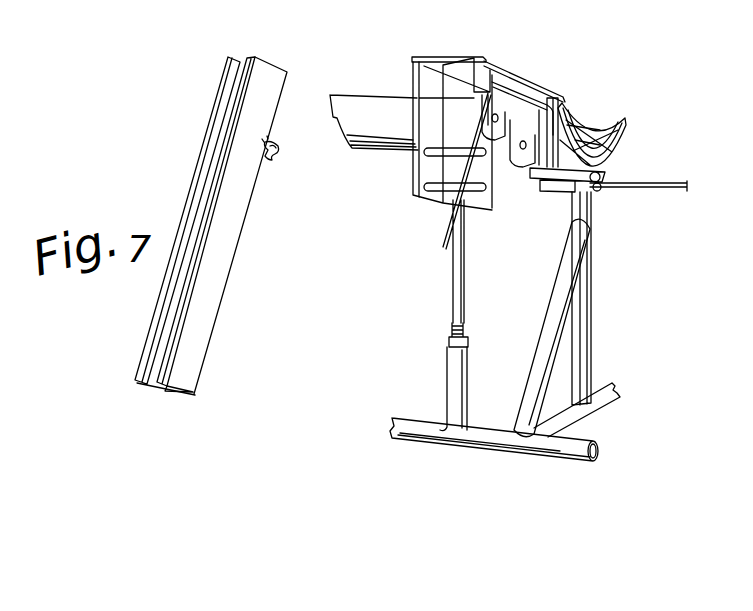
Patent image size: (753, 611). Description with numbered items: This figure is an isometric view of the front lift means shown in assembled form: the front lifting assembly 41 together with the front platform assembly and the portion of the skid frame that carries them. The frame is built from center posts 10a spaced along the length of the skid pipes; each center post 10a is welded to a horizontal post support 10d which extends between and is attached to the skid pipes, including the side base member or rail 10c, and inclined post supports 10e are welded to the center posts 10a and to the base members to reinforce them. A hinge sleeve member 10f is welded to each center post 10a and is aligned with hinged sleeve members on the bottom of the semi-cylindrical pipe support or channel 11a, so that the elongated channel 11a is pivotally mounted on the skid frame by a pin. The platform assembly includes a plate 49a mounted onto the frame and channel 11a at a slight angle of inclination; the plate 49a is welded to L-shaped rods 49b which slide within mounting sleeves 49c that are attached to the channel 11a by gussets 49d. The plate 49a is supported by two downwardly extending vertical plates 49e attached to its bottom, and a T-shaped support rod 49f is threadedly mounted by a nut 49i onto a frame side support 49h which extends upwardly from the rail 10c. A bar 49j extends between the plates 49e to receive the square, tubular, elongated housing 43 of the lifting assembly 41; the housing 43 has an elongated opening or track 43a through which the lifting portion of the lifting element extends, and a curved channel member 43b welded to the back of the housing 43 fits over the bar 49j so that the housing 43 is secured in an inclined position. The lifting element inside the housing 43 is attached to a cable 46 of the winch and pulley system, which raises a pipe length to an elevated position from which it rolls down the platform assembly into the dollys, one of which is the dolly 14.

The front lifting assembly 41 is at (209, 99).
The housing 43 is at (217, 254).
The track 43a is at (215, 170).
The curved channel member 43b is at (268, 160).
The pipe support channel 11a is at (358, 98).
The plate 49a is at (448, 56).
The L-shaped rods 49b is at (500, 72).
The mounting sleeves 49c is at (575, 120).
The gussets 49d is at (612, 127).
The dolly 14 is at (607, 123).
The hinge sleeve member 10f is at (607, 172).
The cable 46 is at (672, 190).
The vertical plates 49e is at (413, 67).
The bar 49j is at (430, 155).
The T-shaped support rod 49f is at (453, 295).
The nut 49i is at (453, 335).
The frame side support 49h is at (448, 365).
The inclined post supports 10e is at (553, 317).
The center posts 10a is at (582, 323).
The horizontal post support 10d is at (607, 403).
The skid pipe 10c is at (433, 440).